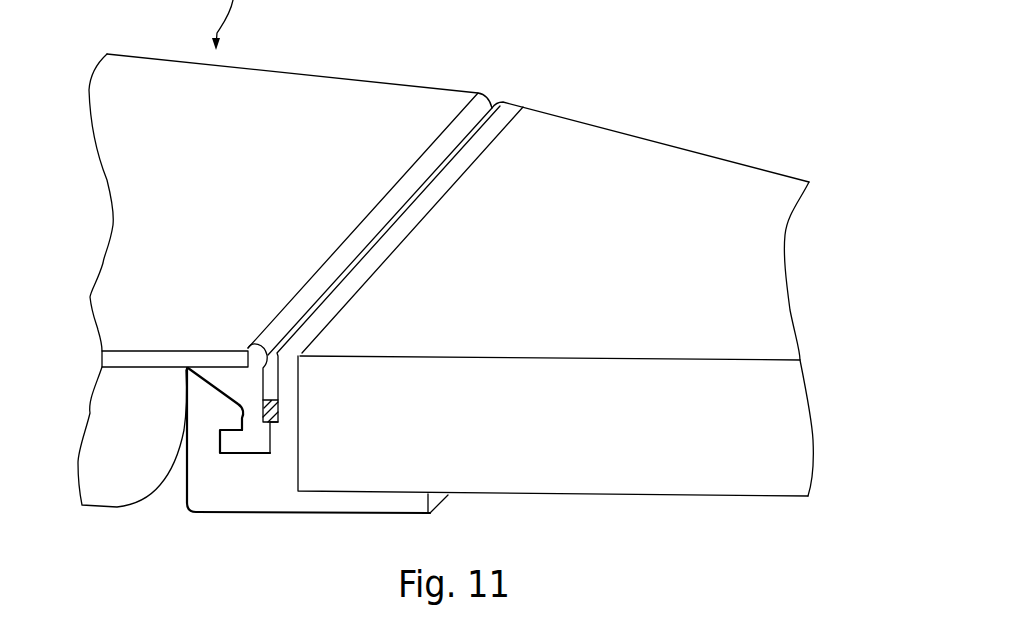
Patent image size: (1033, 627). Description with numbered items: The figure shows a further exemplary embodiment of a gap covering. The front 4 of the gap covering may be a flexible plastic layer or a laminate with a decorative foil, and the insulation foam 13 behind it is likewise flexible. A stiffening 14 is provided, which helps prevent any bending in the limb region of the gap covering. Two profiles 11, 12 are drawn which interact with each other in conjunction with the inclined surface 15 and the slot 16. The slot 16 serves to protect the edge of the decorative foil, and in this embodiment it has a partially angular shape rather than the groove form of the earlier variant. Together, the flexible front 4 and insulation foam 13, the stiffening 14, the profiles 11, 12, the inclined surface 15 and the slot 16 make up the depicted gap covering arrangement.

The front 4 is at (186, 342).
The profile 11 is at (250, 445).
The profile 12 is at (412, 509).
The insulation foam 13 is at (122, 435).
The stiffening 14 is at (229, 378).
The inclined surface 15 is at (189, 376).
The slot 16 is at (272, 397).